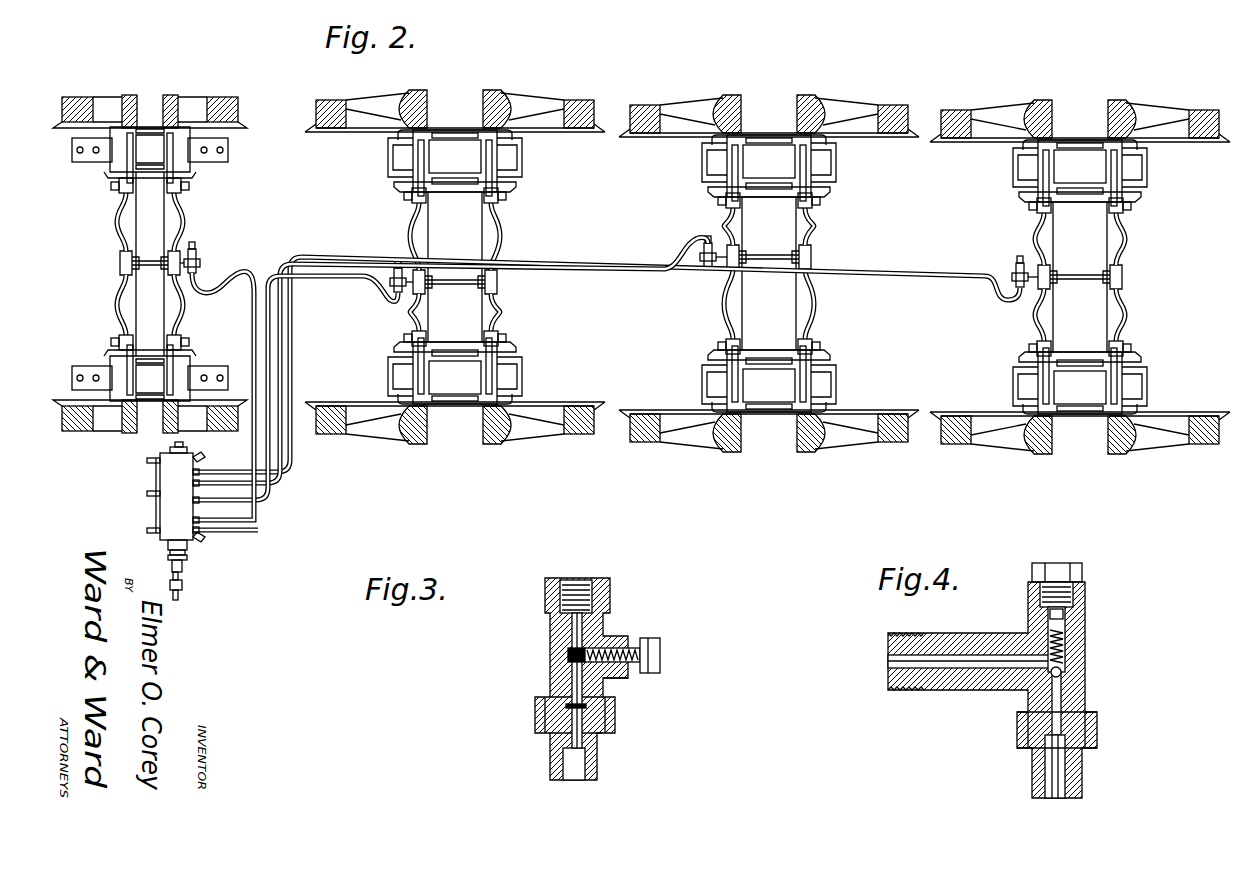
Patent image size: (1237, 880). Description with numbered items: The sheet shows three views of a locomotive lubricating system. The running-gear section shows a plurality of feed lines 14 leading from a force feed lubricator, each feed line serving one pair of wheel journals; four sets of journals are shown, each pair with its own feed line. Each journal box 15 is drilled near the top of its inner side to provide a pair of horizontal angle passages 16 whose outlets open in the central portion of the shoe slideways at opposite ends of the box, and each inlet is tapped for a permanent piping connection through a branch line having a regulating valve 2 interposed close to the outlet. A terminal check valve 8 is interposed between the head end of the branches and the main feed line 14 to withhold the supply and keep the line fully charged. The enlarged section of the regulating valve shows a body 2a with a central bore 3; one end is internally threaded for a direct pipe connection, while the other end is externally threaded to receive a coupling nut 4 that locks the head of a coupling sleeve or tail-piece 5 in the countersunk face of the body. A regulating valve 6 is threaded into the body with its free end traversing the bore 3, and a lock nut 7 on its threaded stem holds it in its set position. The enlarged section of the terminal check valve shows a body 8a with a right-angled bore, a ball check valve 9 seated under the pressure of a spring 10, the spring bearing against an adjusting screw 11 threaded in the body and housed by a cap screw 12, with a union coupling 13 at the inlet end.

In FIG. 2, the regulating valve 2 is at (120, 192).
In FIG. 3, the regulating valve 2 is at (598, 679).
In FIG. 3, the body 2a is at (553, 645).
In FIG. 3, the central bore 3 is at (578, 630).
In FIG. 3, the coupling nut 4 is at (610, 720).
In FIG. 3, the coupling sleeve or tail-piece 5 is at (592, 758).
In FIG. 3, the regulating valve 6 is at (652, 655).
In FIG. 2, the lock nut 7 is at (170, 478).
In FIG. 3, the lock nut 7 is at (626, 677).
In FIG. 2, the terminal check valve 8 is at (197, 258).
In FIG. 4, the terminal check valve 8 is at (1015, 667).
In FIG. 4, the body 8a is at (1087, 684).
In FIG. 4, the ball check valve 9 is at (1060, 672).
In FIG. 4, the spring 10 is at (1060, 648).
In FIG. 4, the adjusting screw 11 is at (1048, 622).
In FIG. 4, the cap screw 12 is at (1058, 572).
In FIG. 4, the union coupling 13 is at (1020, 738).
In FIG. 2, the feed lines 14 is at (272, 262).
In FIG. 2, the journal box 15 is at (641, 272).
In FIG. 2, the horizontal angle passages 16 is at (168, 175).